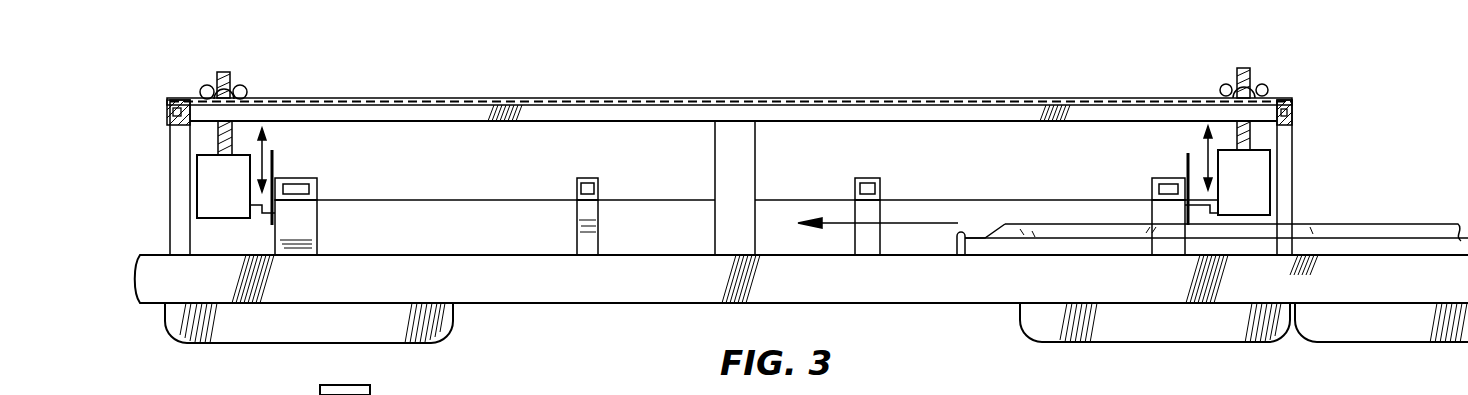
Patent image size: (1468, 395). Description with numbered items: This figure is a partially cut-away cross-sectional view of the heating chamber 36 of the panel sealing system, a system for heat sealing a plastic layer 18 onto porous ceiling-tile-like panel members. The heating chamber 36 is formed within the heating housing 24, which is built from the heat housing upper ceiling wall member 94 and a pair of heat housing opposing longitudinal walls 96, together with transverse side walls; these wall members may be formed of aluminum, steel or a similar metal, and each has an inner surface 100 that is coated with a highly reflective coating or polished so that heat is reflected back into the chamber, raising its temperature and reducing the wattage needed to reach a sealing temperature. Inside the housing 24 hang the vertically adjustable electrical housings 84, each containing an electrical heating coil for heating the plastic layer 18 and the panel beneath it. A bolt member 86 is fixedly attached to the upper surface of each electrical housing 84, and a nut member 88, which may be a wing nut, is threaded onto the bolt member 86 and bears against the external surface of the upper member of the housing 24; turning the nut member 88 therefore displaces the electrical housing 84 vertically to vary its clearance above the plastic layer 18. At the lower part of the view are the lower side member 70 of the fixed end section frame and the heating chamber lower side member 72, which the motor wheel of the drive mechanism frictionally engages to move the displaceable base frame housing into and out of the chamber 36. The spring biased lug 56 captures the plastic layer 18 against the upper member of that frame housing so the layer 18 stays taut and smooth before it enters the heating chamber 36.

The plastic layer 18 is at (1390, 224).
The heating housing 24 is at (704, 98).
The heating chamber 36 is at (865, 132).
The spring biased lug 56 is at (966, 237).
The lower side member 70 is at (1368, 330).
The heating chamber lower side member 72 is at (1190, 327).
The vertically adjustable electrical housing 84 is at (205, 175).
The bolt member 86 is at (217, 70).
The nut member 88 is at (248, 91).
The heat housing upper ceiling wall member 94 is at (561, 98).
The heat housing opposing longitudinal walls 96 is at (170, 198).
The inner surface 100 is at (632, 80).